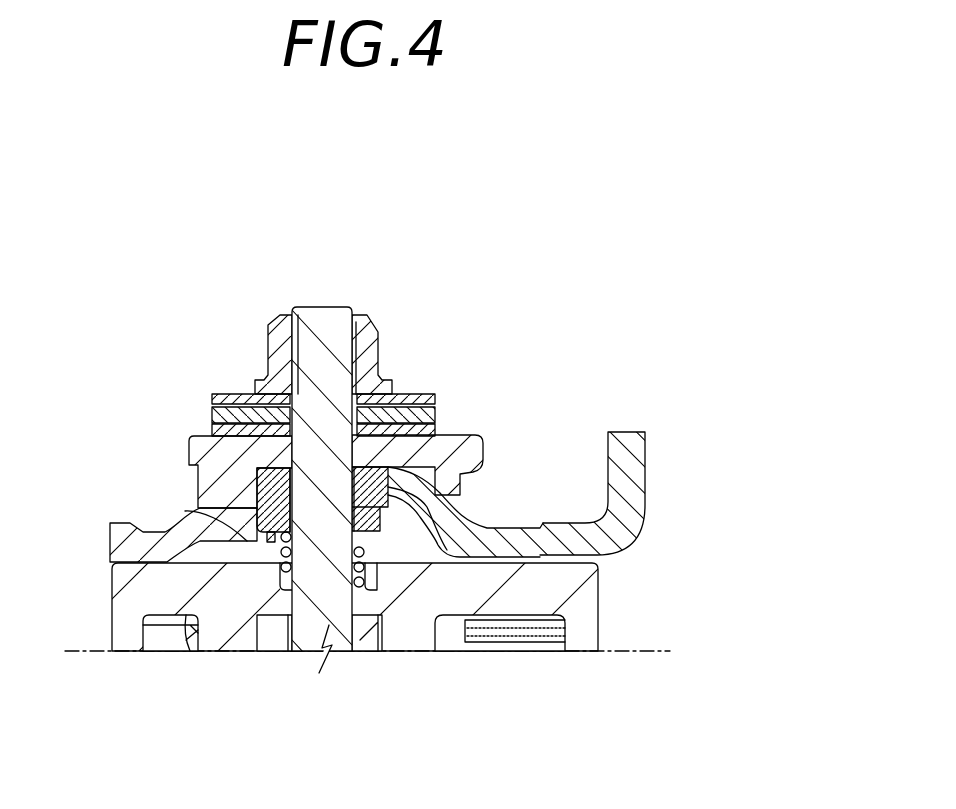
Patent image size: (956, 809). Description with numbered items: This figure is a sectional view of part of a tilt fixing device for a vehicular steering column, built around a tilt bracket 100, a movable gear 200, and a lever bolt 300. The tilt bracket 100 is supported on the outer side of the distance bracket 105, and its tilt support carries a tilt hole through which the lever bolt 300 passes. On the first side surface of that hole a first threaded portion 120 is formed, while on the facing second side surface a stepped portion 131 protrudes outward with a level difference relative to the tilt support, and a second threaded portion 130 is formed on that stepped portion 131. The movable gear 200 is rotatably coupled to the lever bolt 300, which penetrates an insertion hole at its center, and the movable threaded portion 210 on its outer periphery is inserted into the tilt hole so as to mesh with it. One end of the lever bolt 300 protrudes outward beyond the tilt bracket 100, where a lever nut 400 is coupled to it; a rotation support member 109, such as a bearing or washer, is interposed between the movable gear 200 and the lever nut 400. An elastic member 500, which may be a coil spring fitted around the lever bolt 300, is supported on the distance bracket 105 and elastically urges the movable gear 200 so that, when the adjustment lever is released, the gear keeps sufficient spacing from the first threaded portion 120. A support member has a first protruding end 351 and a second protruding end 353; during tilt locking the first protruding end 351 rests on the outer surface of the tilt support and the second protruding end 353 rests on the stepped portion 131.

The tilt bracket 100 is at (563, 533).
The distance bracket 105 is at (402, 587).
The rotation support member 109 is at (450, 407).
The first threaded portion 120 is at (200, 512).
The second threaded portion 130 is at (440, 538).
The stepped portion 131 is at (423, 517).
The movable gear 200 is at (273, 513).
The movable threaded portion 210 is at (272, 532).
The lever bolt 300 is at (325, 320).
The first protruding end 351 is at (212, 495).
The second protruding end 353 is at (482, 467).
The lever nut 400 is at (372, 347).
The elastic member 500 is at (280, 548).